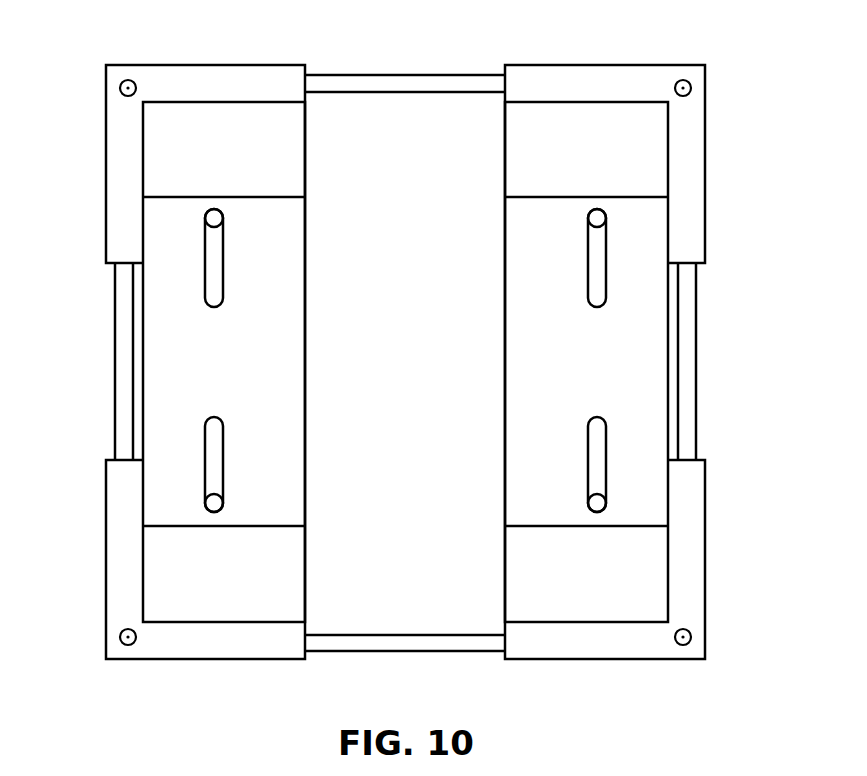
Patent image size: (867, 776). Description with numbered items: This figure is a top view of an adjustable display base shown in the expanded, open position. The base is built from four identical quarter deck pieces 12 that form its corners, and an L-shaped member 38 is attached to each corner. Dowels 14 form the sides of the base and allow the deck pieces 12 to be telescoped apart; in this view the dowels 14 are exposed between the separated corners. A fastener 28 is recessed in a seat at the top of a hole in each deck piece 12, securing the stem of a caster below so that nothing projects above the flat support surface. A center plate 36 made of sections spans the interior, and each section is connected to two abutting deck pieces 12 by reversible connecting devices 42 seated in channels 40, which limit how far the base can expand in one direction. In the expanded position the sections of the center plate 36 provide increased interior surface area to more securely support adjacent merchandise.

The quarter deck piece 12 is at (213, 135).
The dowel 14 is at (405, 85).
The fastener 28 is at (128, 78).
The center plate 36 is at (175, 362).
The L-shaped member 38 is at (125, 173).
The channel 40 is at (213, 272).
The reversible connecting device 42 is at (207, 216).